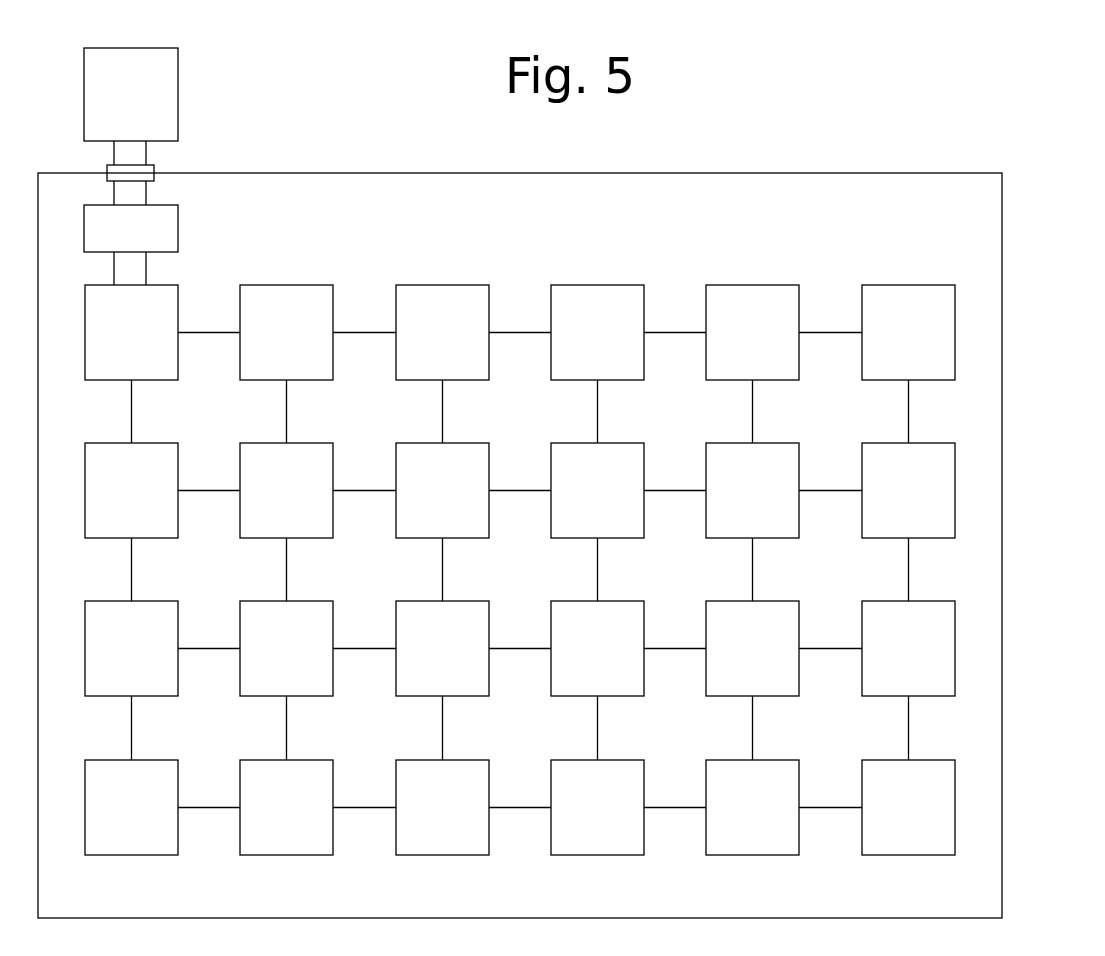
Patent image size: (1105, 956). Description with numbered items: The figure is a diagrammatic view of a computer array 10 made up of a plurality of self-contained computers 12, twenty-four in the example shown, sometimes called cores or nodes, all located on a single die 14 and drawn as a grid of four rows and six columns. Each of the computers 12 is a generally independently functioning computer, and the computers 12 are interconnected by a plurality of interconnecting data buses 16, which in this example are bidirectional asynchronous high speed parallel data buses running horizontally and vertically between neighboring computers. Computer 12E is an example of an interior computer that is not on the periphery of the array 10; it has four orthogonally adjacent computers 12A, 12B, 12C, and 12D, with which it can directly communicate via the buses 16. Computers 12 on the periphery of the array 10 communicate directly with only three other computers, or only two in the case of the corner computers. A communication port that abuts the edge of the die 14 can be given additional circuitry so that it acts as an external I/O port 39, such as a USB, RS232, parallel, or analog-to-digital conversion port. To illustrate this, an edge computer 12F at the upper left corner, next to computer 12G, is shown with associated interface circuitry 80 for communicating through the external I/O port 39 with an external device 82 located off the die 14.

The computer array 10 is at (1042, 326).
The computer 12 is at (570, 600).
The computer 12A is at (421, 344).
The computer 12B is at (577, 502).
The computer 12C is at (265, 502).
The computer 12D is at (421, 660).
The computer 12E is at (422, 502).
The edge computer 12F is at (112, 344).
The computer 12G is at (265, 344).
The die 14 is at (376, 233).
The interconnecting data bus 16 is at (692, 490).
The external I/O port 39 is at (165, 168).
The interface circuitry 80 is at (169, 230).
The external device 82 is at (119, 105).